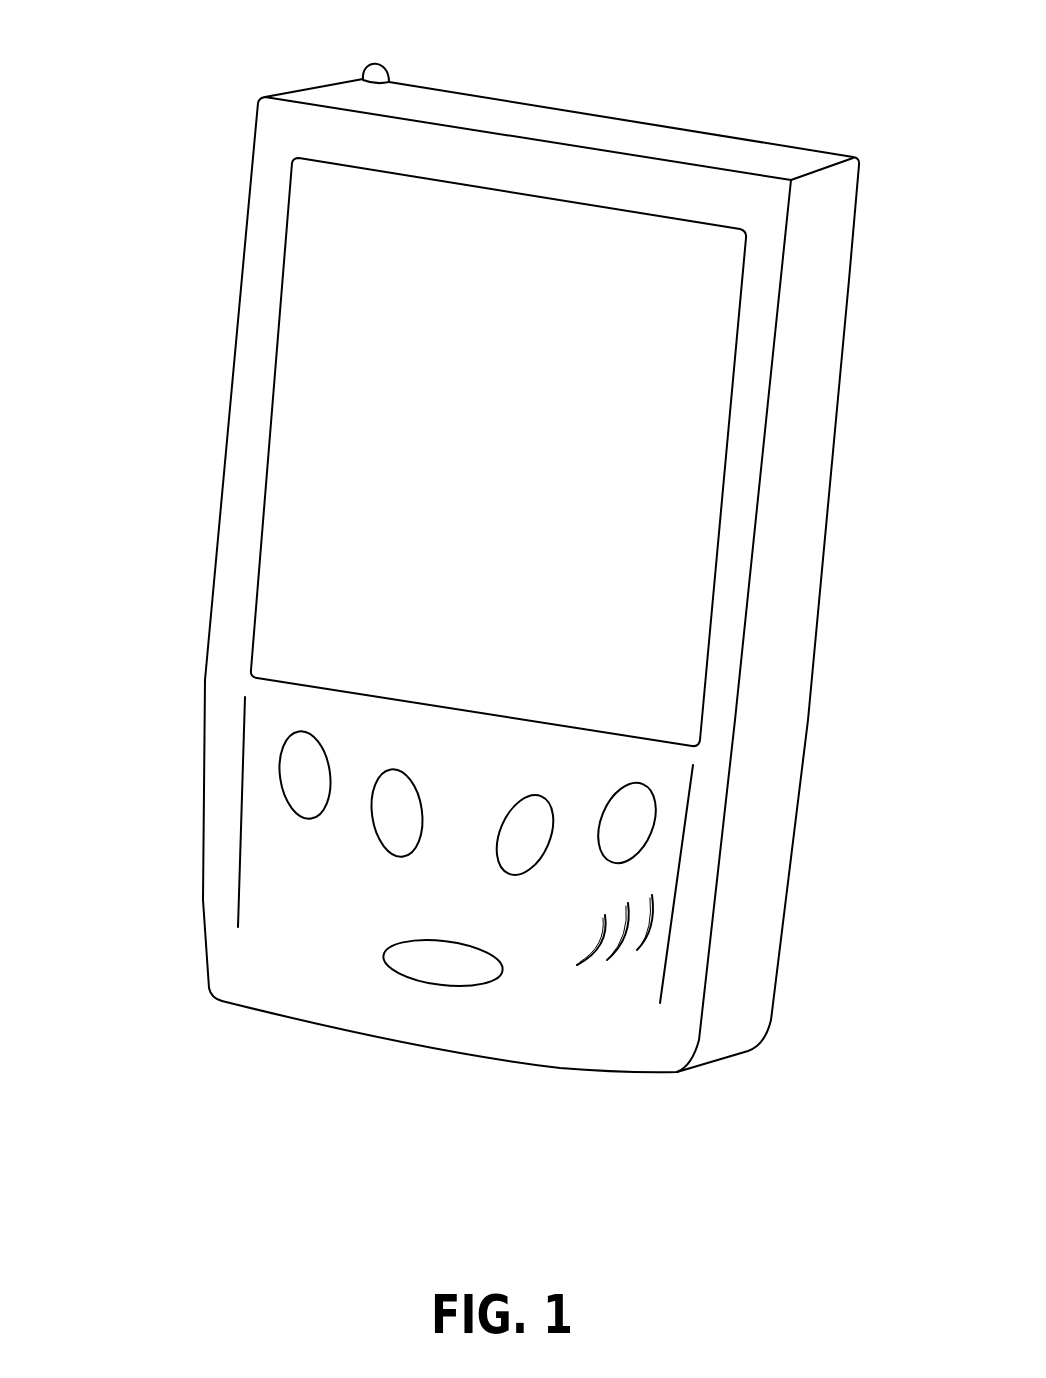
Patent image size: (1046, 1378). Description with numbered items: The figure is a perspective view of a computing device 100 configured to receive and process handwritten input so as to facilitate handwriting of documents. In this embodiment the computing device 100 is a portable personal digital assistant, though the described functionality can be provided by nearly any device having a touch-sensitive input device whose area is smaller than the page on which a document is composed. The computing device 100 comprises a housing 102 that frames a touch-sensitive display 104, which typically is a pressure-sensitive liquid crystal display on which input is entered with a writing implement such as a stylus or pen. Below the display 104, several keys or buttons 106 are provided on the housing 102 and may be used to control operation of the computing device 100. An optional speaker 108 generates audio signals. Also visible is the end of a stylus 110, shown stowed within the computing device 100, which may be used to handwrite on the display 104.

The computing device 100 is at (492, 561).
The housing 102 is at (808, 162).
The touch-sensitive display 104 is at (302, 447).
The keys or buttons 106 is at (272, 856).
The speaker 108 is at (616, 1014).
The stylus 110 is at (378, 66).